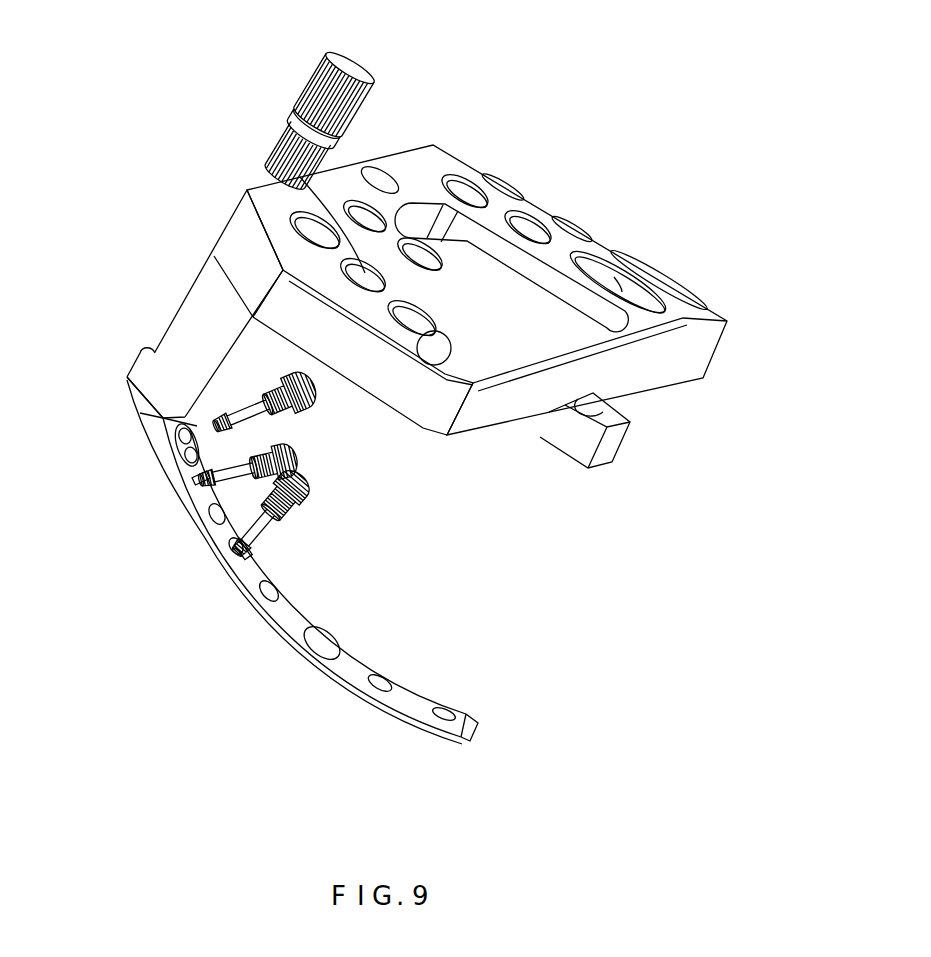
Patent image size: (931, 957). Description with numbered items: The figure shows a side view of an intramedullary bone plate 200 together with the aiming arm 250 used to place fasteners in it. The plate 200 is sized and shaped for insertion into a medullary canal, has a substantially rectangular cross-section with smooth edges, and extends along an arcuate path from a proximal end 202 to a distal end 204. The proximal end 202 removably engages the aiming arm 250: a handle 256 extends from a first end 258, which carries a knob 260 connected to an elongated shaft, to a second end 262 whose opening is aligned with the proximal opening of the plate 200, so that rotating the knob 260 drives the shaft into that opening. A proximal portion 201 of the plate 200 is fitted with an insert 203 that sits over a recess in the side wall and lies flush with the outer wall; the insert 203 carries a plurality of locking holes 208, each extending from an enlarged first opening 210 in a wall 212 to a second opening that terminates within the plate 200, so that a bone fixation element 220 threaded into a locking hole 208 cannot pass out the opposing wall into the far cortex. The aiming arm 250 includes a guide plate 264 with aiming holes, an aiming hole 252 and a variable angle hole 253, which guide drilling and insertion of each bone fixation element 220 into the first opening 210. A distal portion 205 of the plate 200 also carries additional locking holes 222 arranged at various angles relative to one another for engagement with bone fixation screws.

The intramedullary bone plate 200 is at (294, 560).
The proximal portion 201 is at (145, 428).
The proximal end 202 is at (127, 382).
The insert 203 is at (247, 557).
The distal end 204 is at (477, 723).
The distal portion 205 is at (337, 680).
The locking holes 208 is at (190, 497).
The first opening 210 is at (217, 530).
The wall 212 is at (190, 486).
The bone fixation elements 220 is at (313, 487).
The additional locking holes 222 is at (440, 707).
The aiming arm 250 is at (410, 244).
The aiming hole 252 is at (304, 224).
The variable angle hole 253 is at (527, 352).
The handle 256 is at (210, 270).
The first end 258 is at (314, 72).
The knob 260 is at (320, 88).
The second end 262 is at (127, 380).
The guide plate 264 is at (683, 358).